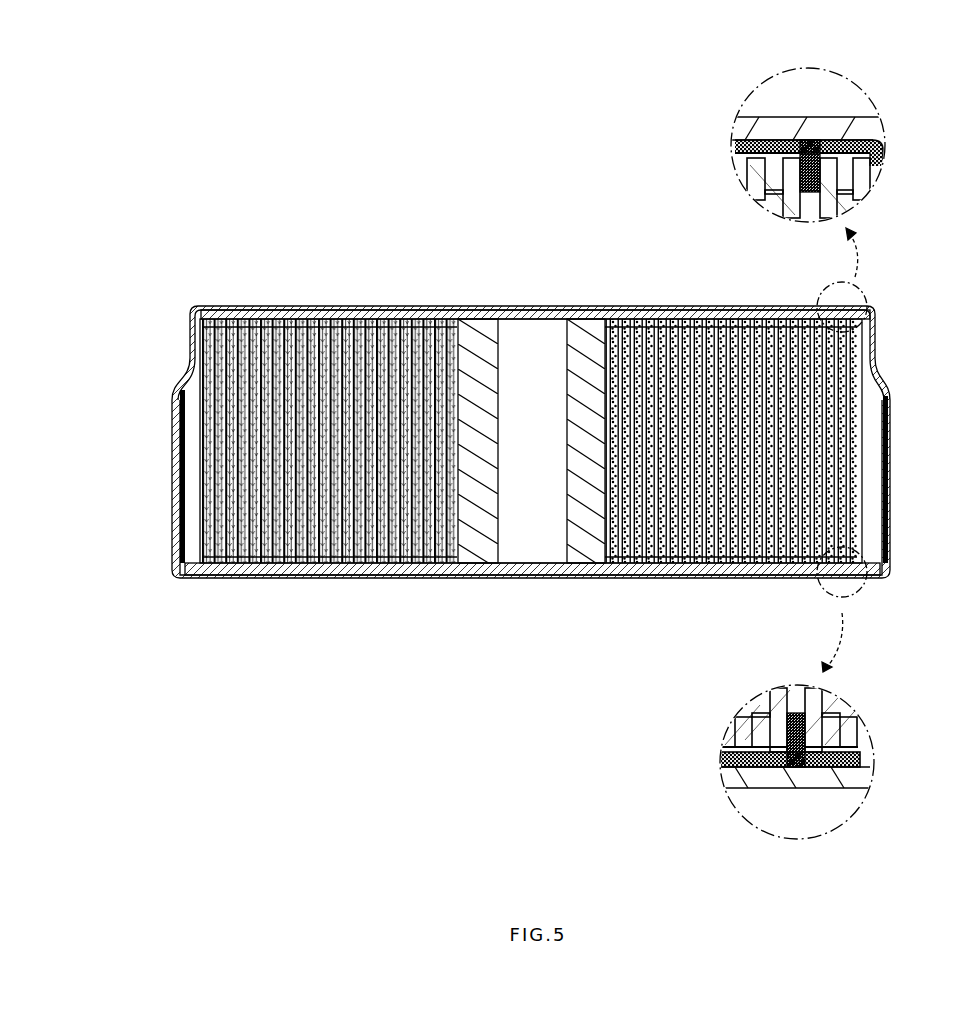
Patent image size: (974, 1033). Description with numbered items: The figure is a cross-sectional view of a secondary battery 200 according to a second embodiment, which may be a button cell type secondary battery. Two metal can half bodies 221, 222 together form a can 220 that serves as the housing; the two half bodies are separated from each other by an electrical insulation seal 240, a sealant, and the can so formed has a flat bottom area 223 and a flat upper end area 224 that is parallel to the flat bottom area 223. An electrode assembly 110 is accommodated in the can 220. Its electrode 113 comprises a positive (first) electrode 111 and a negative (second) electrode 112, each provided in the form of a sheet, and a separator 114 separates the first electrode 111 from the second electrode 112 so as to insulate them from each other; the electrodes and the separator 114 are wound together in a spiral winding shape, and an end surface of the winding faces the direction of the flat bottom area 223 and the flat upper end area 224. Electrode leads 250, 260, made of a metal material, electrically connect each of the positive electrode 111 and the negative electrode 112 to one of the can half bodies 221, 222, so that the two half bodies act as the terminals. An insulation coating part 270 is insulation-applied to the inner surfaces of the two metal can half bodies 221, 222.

The secondary battery 200 is at (208, 235).
The can 220 is at (98, 343).
The metal can half body 221 is at (165, 407).
The metal can half body 222 is at (178, 331).
The flat bottom area 223 is at (533, 578).
The flat upper end area 224 is at (533, 306).
The electrical insulation seal 240 is at (882, 388).
The electrode lead 250 is at (807, 140).
The electrode lead 260 is at (795, 768).
The insulation coating part 270 is at (738, 146).
The electrode assembly 110 is at (605, 688).
The positive electrode 111 is at (762, 706).
The negative electrode 112 is at (786, 690).
The electrode 113 is at (657, 677).
The separator 114 is at (778, 735).